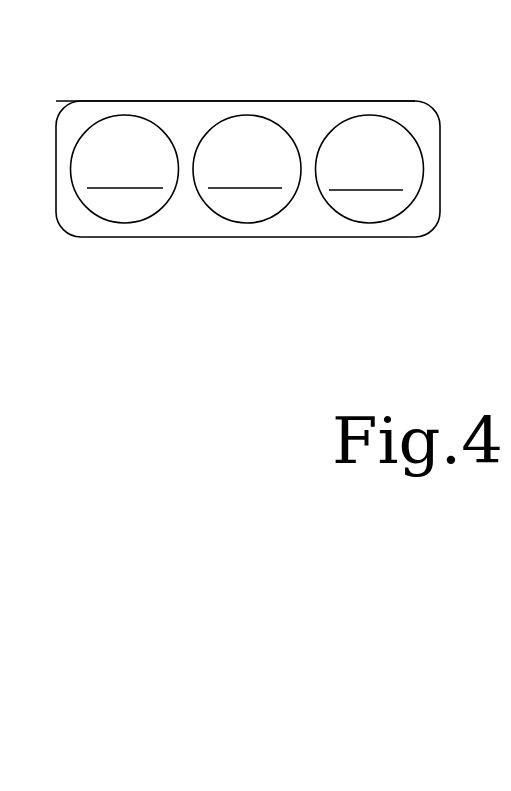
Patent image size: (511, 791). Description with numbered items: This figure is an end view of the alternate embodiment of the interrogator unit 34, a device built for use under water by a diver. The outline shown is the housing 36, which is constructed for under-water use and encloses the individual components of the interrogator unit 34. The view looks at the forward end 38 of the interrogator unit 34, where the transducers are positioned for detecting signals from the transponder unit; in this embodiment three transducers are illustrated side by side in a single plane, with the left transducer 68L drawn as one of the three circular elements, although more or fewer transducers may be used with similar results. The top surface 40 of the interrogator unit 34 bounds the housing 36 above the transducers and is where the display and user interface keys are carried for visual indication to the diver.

The interrogator unit 34 is at (255, 76).
The top surface 40 is at (305, 102).
The forward end 38 is at (178, 218).
The housing 36 is at (280, 228).
The transducer 68L is at (370, 169).